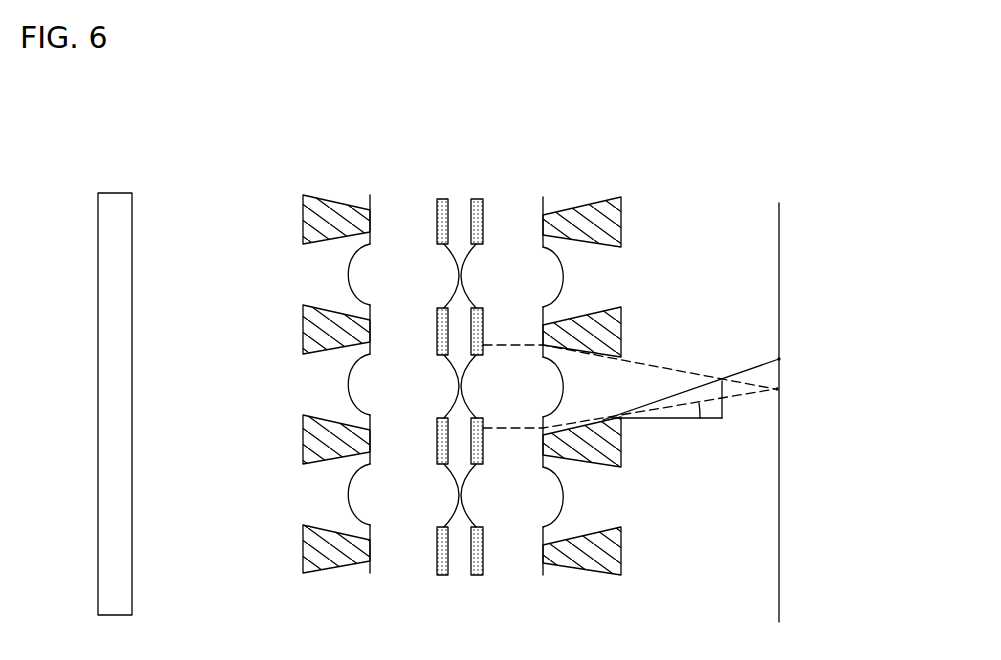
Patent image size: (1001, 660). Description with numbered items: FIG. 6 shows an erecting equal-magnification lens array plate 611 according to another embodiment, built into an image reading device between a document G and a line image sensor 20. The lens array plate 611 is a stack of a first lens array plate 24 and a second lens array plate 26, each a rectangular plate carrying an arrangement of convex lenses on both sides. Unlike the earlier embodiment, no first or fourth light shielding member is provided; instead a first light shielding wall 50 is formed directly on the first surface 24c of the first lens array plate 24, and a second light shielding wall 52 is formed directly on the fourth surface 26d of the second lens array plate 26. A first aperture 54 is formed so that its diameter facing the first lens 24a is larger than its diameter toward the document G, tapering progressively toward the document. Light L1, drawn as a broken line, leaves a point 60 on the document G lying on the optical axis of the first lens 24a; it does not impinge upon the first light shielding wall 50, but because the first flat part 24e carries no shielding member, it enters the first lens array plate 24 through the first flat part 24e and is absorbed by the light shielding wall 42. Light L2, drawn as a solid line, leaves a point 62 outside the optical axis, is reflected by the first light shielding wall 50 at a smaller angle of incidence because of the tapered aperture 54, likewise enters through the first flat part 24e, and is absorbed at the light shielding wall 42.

The line image sensor 20 is at (118, 193).
The erecting equal-magnification lens array plate 611 is at (346, 152).
The second lens array plate 26 is at (400, 215).
The fourth surface 26d is at (330, 281).
The second light shielding wall 52 is at (303, 431).
The first lens array plate 24 is at (507, 215).
The first surface 24c is at (567, 283).
The first lens 24a is at (565, 390).
The first flat part 24e is at (543, 455).
The first light shielding wall 50 is at (622, 455).
The second light shielding wall 42 is at (473, 458).
The document G is at (781, 248).
The first aperture 54 is at (630, 363).
The point on the document on the optical axis 60 is at (780, 389).
The point on the document outside the optical axis 62 is at (782, 359).
The light L1 is at (763, 396).
The light L2 is at (750, 369).